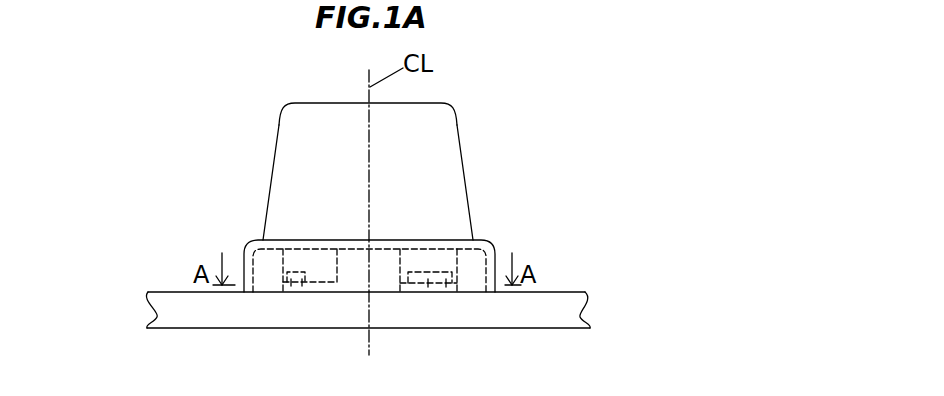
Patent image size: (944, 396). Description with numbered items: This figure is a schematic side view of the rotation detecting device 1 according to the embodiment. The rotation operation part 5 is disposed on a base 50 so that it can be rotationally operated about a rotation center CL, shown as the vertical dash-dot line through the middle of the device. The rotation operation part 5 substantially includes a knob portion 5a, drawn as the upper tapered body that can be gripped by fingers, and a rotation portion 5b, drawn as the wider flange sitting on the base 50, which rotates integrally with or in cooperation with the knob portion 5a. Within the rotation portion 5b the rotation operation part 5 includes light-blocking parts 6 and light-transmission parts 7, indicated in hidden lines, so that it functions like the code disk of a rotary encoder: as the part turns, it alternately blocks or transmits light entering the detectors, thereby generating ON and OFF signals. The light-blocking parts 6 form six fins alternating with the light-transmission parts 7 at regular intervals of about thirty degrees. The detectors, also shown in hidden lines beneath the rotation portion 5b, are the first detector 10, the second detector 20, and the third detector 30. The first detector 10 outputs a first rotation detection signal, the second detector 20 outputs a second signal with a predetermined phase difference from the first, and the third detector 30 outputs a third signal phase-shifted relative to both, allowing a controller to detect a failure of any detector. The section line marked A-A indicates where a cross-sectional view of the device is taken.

The rotation detecting device 1 is at (505, 73).
The rotation operation part 5 is at (465, 175).
The knob portion 5a is at (460, 133).
The rotation portion 5b is at (490, 242).
The light-blocking parts 6 is at (310, 260).
The light-transmission parts 7 is at (345, 258).
The first detector 10 is at (442, 292).
The second detector 20 is at (417, 292).
The third detector 30 is at (293, 290).
The base 50 is at (517, 317).